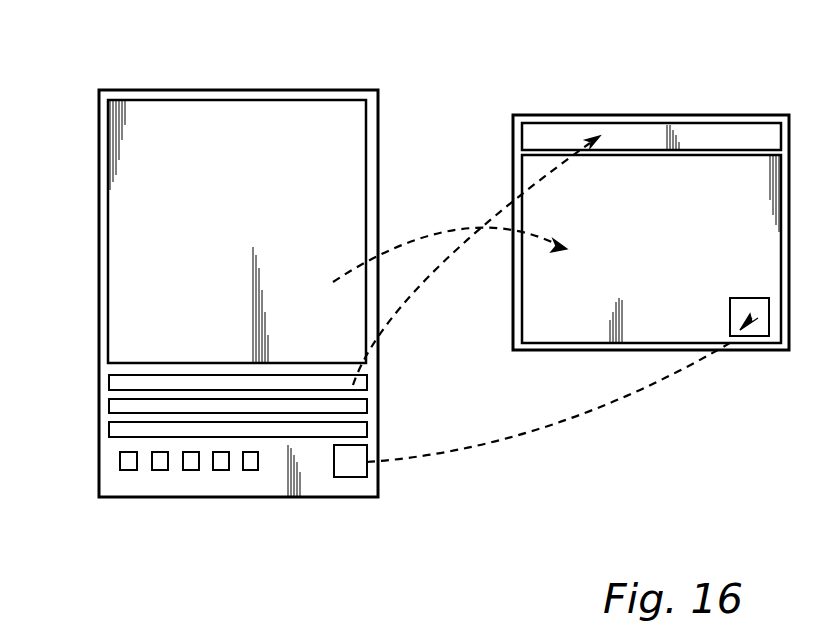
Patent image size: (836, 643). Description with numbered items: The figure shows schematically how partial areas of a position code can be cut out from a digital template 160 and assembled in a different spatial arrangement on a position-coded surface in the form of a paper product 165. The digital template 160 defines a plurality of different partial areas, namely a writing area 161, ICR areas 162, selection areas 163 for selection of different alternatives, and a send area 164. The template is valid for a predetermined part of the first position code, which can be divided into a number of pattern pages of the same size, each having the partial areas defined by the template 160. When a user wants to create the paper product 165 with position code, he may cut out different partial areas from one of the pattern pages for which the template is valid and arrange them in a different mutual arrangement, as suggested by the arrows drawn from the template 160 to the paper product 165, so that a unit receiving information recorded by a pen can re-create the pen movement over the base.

The digital template 160 is at (335, 90).
The writing area 161 is at (142, 255).
The ICR areas 162 is at (110, 427).
The selection areas 163 is at (251, 470).
The send area 164 is at (353, 477).
The paper product 165 is at (697, 115).